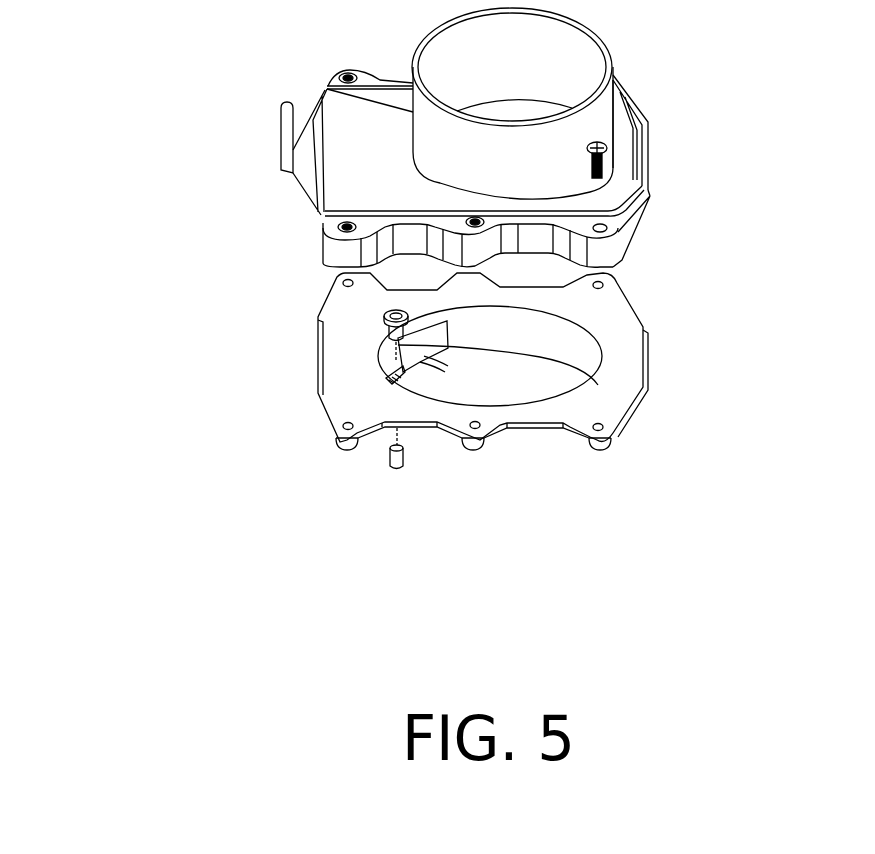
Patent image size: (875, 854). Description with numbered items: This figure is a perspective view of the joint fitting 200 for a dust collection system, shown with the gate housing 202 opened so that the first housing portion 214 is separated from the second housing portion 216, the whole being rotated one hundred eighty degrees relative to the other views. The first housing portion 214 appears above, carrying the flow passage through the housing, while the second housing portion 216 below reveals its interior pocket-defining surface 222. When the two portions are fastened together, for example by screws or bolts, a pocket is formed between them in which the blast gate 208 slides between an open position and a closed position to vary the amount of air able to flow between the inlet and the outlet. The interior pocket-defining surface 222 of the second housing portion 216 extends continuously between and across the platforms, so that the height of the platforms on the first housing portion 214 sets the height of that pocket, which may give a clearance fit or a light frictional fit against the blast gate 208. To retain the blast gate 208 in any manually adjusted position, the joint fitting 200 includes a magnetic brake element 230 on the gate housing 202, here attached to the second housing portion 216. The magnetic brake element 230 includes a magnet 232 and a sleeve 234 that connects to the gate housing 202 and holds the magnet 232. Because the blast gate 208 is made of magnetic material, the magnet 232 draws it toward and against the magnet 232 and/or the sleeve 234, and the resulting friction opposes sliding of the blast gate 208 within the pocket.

The joint fitting 200 is at (702, 465).
The gate housing 202 is at (642, 303).
The blast gate 208 is at (305, 183).
The first housing portion 214 is at (650, 178).
The second housing portion 216 is at (643, 362).
The interior pocket-defining surface 222 is at (641, 414).
The magnetic brake element 230 is at (388, 465).
The magnet 232 is at (393, 468).
The sleeve 234 is at (385, 313).